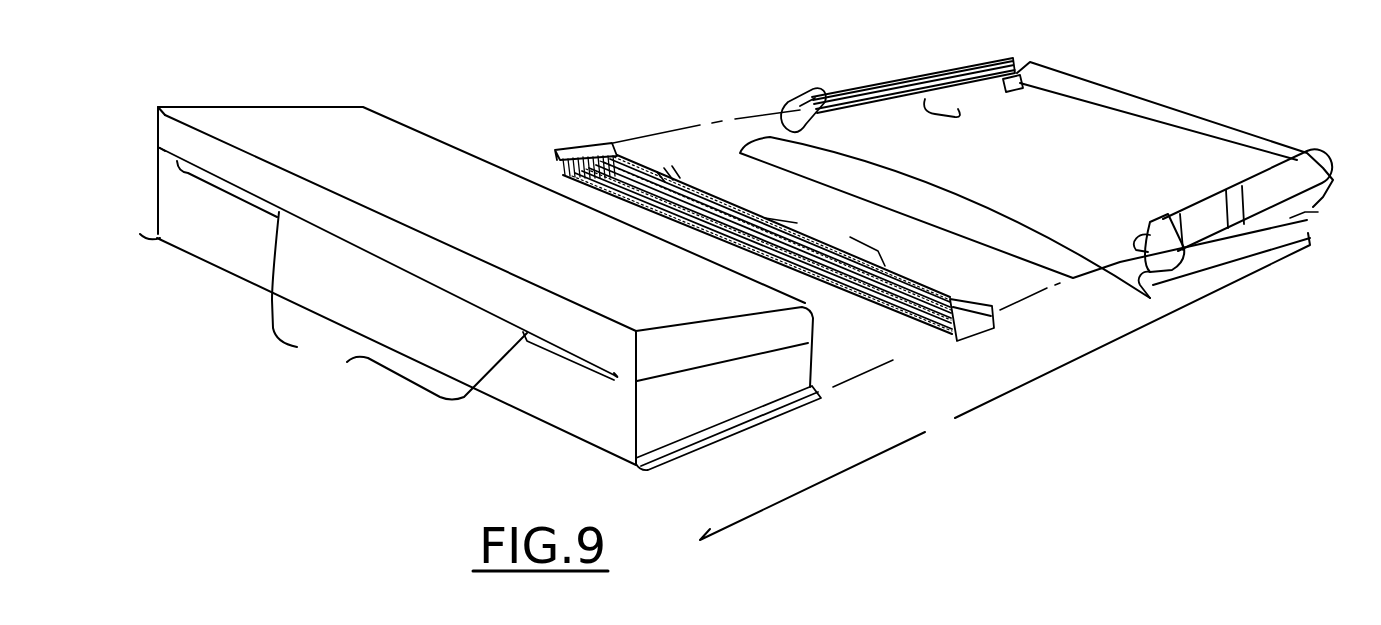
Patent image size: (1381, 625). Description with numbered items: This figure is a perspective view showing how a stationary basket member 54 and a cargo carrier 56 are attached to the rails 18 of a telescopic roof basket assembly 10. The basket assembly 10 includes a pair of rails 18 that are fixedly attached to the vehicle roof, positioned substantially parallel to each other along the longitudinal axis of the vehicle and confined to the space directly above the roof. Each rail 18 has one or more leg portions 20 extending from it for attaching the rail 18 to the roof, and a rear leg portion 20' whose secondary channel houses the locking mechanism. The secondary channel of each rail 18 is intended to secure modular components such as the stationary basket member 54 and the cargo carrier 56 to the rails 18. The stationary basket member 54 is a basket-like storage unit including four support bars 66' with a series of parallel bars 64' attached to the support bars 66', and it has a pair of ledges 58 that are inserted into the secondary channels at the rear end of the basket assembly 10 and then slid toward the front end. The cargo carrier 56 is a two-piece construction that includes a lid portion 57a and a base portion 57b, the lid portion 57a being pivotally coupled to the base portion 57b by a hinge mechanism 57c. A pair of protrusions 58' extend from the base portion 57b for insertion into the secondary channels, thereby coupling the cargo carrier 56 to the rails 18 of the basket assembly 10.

The basket assembly 10 is at (1032, 62).
The rail 18 is at (902, 75).
The leg portion 20 is at (1140, 154).
The rear leg portion 20' is at (1012, 193).
The stationary basket member 54 is at (946, 299).
The cargo carrier 56 is at (134, 70).
The lid portion 57a is at (163, 107).
The base portion 57b is at (156, 200).
The hinge mechanism 57c is at (399, 306).
The ledge 58 is at (791, 218).
The protrusion 58' is at (728, 428).
The parallel bars 64' is at (687, 164).
The support bar 66' is at (825, 237).